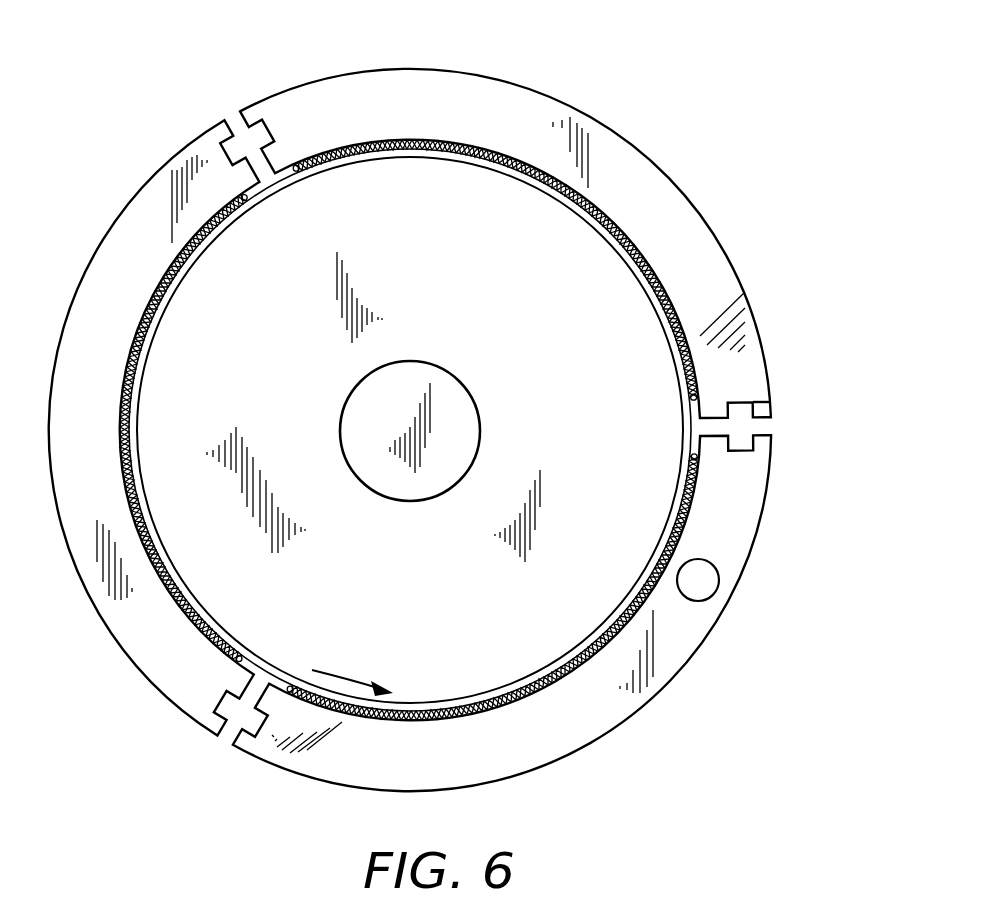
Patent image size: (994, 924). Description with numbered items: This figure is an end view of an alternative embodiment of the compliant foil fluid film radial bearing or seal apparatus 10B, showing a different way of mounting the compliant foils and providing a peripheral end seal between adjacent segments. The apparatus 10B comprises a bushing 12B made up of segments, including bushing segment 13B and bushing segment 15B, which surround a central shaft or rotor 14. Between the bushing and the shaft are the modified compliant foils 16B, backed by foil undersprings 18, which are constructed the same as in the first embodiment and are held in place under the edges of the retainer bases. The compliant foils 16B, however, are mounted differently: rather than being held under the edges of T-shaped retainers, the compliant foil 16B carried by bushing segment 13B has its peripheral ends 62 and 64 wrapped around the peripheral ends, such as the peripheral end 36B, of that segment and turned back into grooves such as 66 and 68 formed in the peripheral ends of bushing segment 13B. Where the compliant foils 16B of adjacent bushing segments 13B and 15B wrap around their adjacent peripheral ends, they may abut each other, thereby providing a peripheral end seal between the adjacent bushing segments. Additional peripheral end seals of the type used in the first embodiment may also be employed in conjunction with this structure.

The compliant foil fluid film radial bearing and/or seal apparatus 10B is at (130, 89).
The bushing 12B is at (439, 424).
The bushing segment 13B is at (558, 98).
The bushing segment 15B is at (707, 640).
The shaft or rotor 14 is at (508, 339).
The compliant foil 16B is at (640, 255).
The foil underspring 18 is at (653, 270).
The peripheral end of the compliant foil 62 is at (255, 147).
The groove 68 is at (272, 130).
The peripheral end of the compliant foil 64 is at (753, 410).
The groove 66 is at (757, 411).
The peripheral end of the bushing segment 36B is at (758, 418).